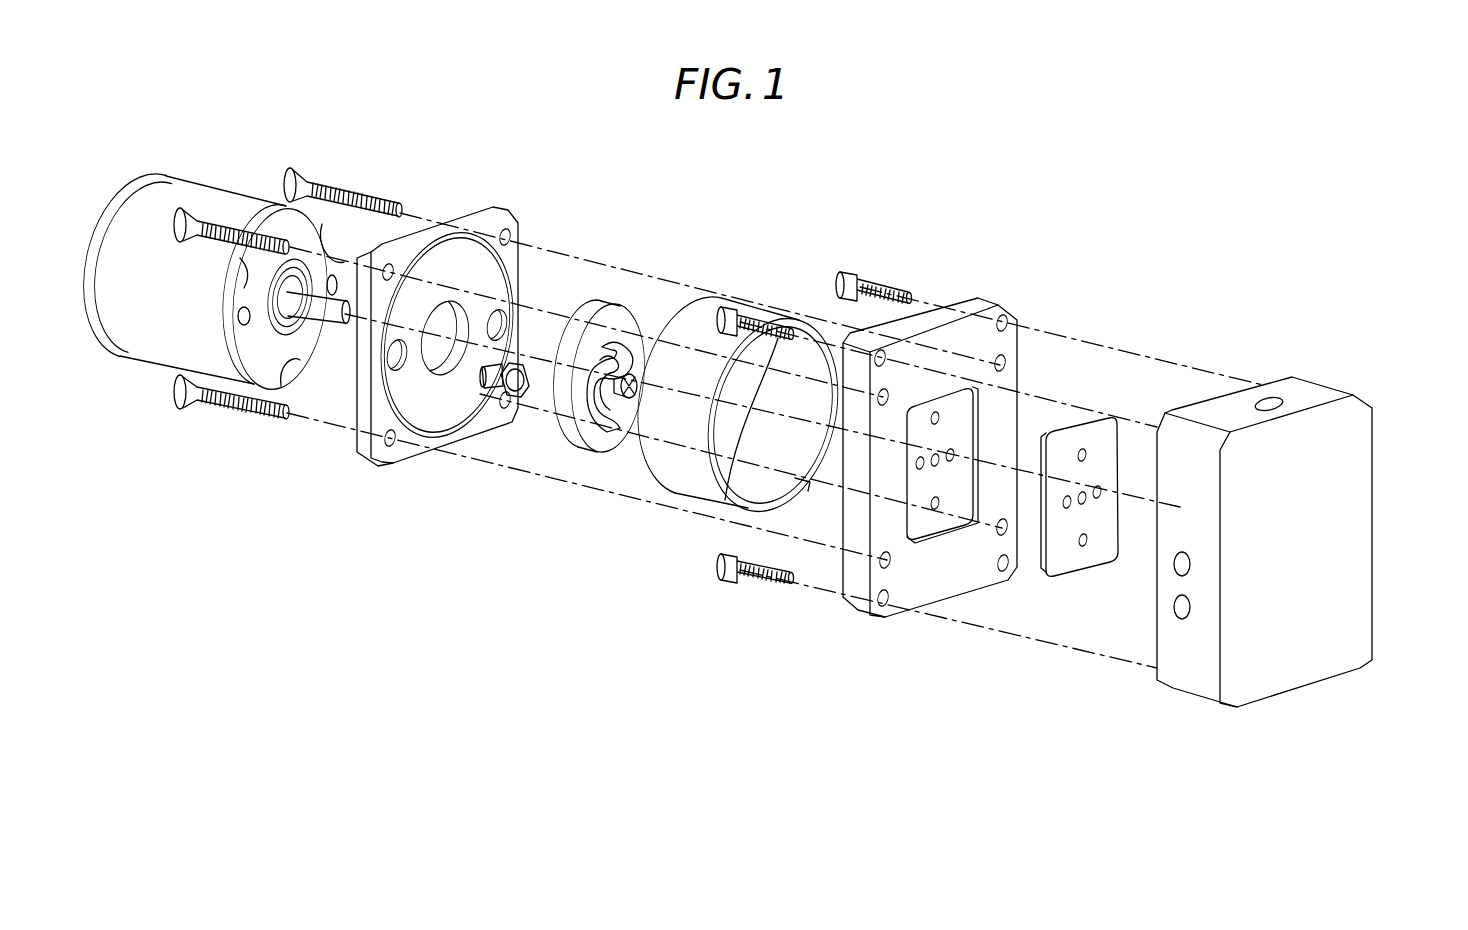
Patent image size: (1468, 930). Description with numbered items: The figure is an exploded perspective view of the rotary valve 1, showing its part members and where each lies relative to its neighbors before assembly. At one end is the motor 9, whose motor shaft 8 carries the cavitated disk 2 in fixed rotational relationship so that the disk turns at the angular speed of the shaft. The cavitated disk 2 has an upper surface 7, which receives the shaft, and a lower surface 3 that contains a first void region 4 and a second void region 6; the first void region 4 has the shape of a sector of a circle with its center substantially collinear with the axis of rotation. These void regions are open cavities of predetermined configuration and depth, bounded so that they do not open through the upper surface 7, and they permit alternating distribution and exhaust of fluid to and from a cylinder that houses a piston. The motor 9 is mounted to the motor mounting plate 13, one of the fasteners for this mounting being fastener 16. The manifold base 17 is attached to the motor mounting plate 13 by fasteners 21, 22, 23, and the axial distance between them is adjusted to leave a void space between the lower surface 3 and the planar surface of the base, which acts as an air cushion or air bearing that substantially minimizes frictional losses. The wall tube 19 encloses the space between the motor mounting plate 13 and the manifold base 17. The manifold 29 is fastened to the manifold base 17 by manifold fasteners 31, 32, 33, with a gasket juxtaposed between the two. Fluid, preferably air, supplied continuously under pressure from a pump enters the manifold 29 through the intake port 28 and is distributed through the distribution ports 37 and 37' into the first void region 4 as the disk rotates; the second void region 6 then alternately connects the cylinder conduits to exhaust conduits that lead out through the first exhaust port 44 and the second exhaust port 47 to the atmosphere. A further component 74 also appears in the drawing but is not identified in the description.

The rotary valve 1 is at (590, 510).
The cavitated disk 2 is at (572, 413).
The lower surface 3 is at (637, 318).
The first void region 4 is at (622, 448).
The second void region 6 is at (595, 417).
The upper surface 7 is at (580, 316).
The motor shaft 8 is at (323, 317).
The motor 9 is at (213, 200).
The motor mounting plate 13 is at (470, 215).
The fastener 16 is at (520, 370).
The manifold base 17 is at (973, 307).
The wall tube 19 is at (683, 487).
The fastener 21 is at (215, 225).
The fastener 22 is at (340, 182).
The fastener 23 is at (223, 410).
The intake port 28 is at (1273, 397).
The manifold 29 is at (1353, 490).
The manifold fastener 31 is at (753, 318).
The manifold fastener 32 is at (878, 283).
The manifold fastener 33 is at (763, 587).
The distribution port 37 is at (1036, 361).
The distribution port 37' is at (1134, 430).
The first exhaust port 44 is at (1173, 563).
The second exhaust port 47 is at (1173, 610).
The motor flange 74 is at (359, 334).